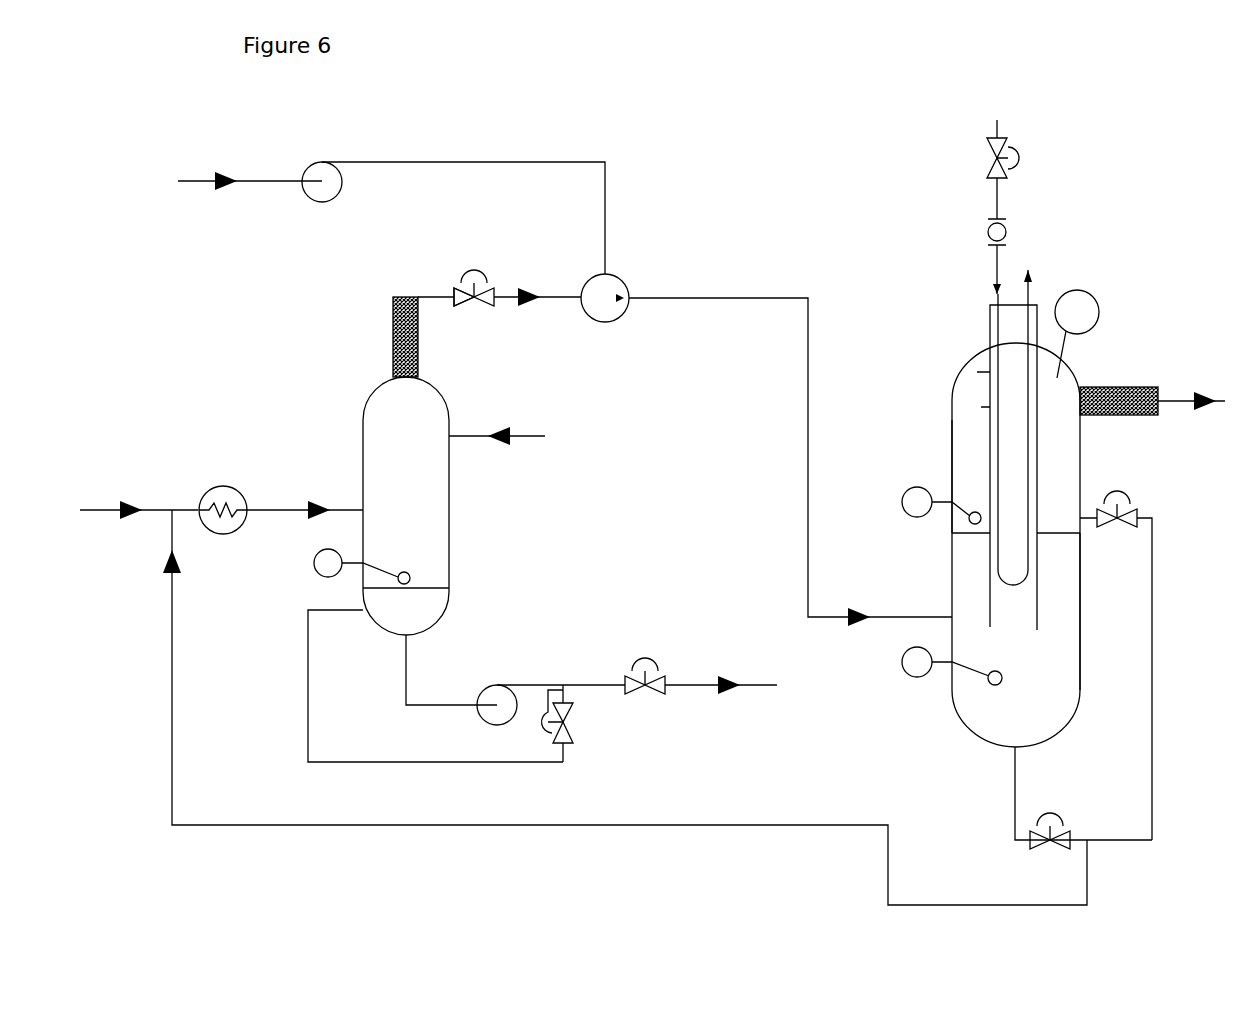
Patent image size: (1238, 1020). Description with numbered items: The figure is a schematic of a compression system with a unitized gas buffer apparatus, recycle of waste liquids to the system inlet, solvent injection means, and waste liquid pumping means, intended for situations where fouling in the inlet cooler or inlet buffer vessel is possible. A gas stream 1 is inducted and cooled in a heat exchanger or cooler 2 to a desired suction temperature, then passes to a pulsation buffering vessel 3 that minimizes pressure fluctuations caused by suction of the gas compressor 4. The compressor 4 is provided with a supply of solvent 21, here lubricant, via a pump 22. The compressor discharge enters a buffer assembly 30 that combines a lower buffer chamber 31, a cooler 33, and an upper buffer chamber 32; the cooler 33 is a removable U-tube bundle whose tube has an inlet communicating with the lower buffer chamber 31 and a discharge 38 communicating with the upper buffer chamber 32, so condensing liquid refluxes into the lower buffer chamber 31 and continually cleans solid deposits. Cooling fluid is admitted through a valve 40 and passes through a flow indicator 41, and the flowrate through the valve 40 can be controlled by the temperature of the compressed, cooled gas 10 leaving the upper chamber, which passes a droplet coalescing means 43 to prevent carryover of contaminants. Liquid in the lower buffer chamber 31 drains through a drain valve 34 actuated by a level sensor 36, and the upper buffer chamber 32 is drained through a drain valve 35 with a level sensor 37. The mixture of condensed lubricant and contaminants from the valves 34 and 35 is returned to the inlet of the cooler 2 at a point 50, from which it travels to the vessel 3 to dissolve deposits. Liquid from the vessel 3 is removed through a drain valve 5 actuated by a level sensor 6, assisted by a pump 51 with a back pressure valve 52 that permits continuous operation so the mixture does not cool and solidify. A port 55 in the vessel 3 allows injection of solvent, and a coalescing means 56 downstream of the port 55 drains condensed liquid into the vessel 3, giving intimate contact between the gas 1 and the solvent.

The gas stream 1 is at (122, 532).
The heat exchanger or cooler 2 is at (279, 491).
The pulsation buffering vessel 3 is at (420, 541).
The gas compressor 4 is at (637, 394).
The drain valve 5 is at (701, 698).
The level sensor 6 is at (427, 655).
The compressed, cooled gas 10 is at (1194, 370).
The solvent 21 is at (242, 214).
The pump 22 is at (328, 158).
The buffer assembly 30 is at (1085, 511).
The lower buffer chamber 31 is at (1100, 611).
The upper buffer chamber 32 is at (930, 473).
The cooler 33 is at (1015, 449).
The drain valve 34 is at (1062, 814).
The drain valve 35 is at (1125, 665).
The level sensor 36 is at (952, 687).
The level sensor 37 is at (922, 499).
The discharge 38 is at (997, 467).
The valve 40 is at (970, 169).
The flow indicator 41 is at (965, 256).
The droplet coalescing means 43 is at (1119, 383).
The point 50 is at (607, 707).
The pump 51 is at (548, 685).
The back pressure valve 52 is at (512, 506).
The port 55 is at (514, 437).
The coalescing means 56 is at (387, 337).